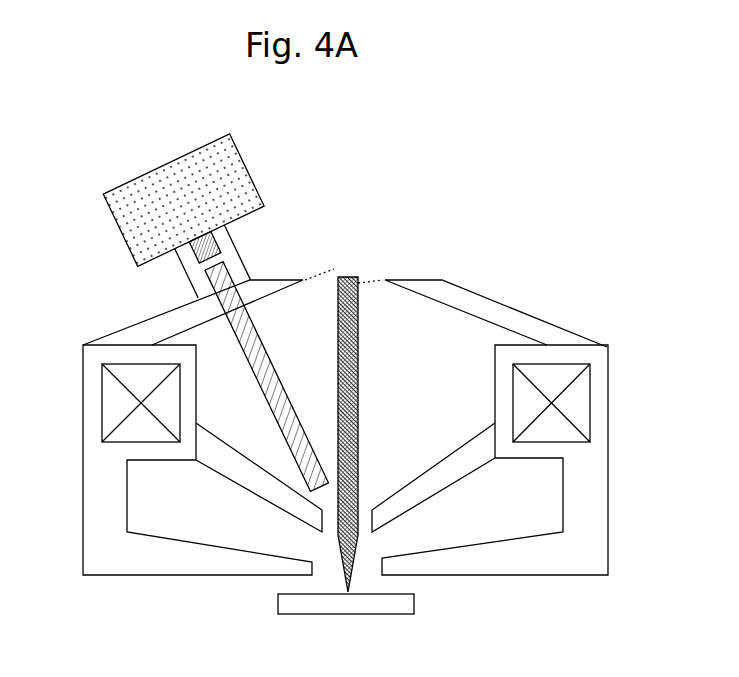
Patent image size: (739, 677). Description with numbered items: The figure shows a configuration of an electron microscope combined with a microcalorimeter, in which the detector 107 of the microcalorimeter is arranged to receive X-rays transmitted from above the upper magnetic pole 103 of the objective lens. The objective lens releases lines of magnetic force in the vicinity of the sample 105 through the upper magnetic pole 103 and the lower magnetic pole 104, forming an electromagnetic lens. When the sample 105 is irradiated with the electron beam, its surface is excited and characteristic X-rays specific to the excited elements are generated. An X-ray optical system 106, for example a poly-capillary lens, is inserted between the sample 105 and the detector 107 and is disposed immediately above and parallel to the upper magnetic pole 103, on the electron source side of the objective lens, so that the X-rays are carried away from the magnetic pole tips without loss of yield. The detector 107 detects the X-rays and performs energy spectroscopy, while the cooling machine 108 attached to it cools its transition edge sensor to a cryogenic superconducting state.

The upper magnetic pole 103 is at (250, 477).
The lower magnetic pole 104 is at (183, 562).
The sample 105 is at (367, 603).
The X-ray optical system 106 is at (273, 382).
The detector 107 is at (226, 230).
The cooling machine 108 is at (163, 210).